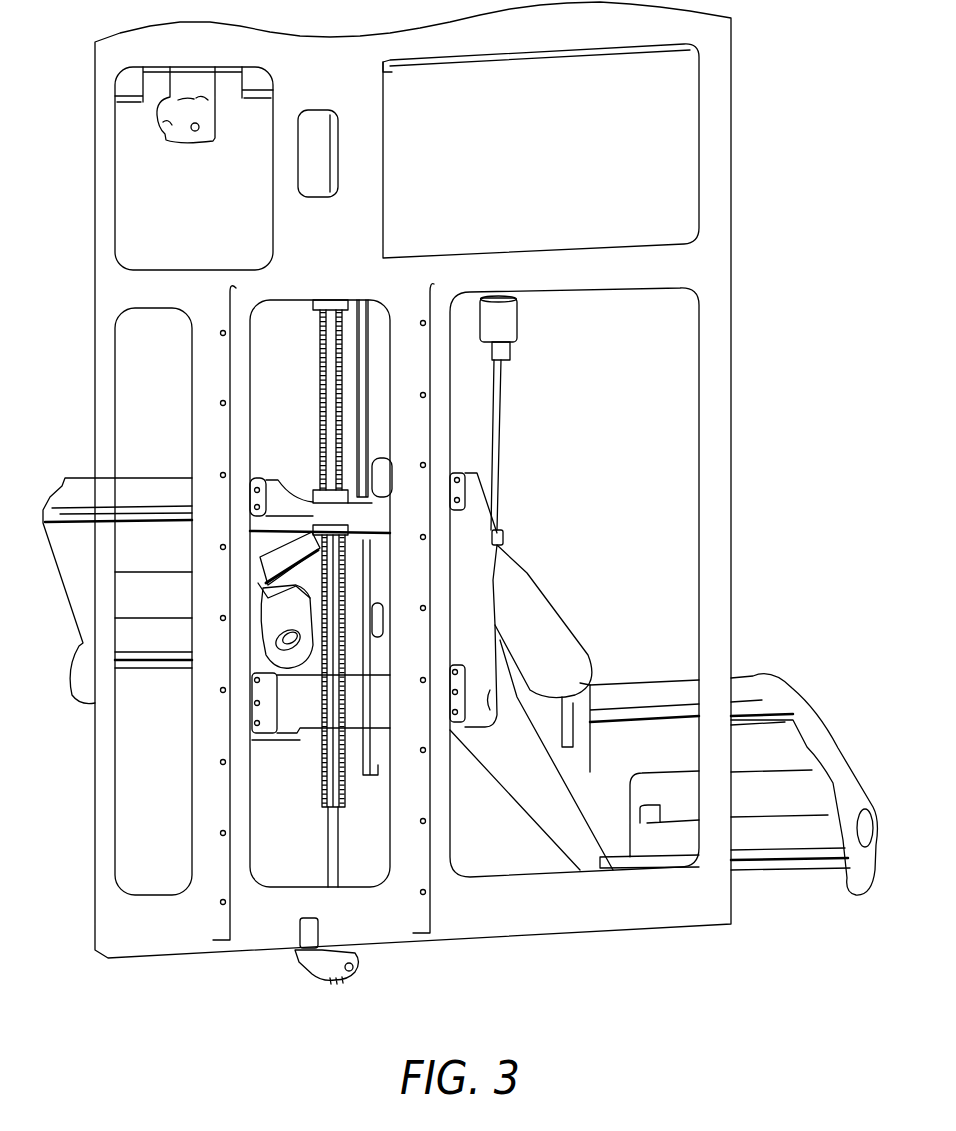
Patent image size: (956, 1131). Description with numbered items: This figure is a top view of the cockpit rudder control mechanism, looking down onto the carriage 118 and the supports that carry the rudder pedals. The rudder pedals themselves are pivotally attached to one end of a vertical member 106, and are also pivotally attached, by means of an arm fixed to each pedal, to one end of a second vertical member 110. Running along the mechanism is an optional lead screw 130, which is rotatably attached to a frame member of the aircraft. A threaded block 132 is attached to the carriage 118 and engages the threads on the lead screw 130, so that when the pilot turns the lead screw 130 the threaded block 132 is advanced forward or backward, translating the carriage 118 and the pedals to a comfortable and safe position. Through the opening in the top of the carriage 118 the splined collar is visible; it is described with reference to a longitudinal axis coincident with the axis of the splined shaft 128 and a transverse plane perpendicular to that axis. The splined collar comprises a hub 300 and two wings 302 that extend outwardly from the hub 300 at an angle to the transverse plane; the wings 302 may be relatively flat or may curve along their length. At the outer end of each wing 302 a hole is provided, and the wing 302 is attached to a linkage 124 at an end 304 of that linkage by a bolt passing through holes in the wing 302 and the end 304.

The vertical member 106 is at (543, 810).
The vertical member 110 is at (582, 660).
The carriage 118 is at (485, 527).
The linkage 124 is at (270, 632).
The splined shaft 128 is at (350, 337).
The lead screw 130 is at (320, 805).
The threaded block 132 is at (320, 475).
The hub 300 is at (363, 548).
The wing 302 is at (282, 557).
The end 304 is at (270, 592).